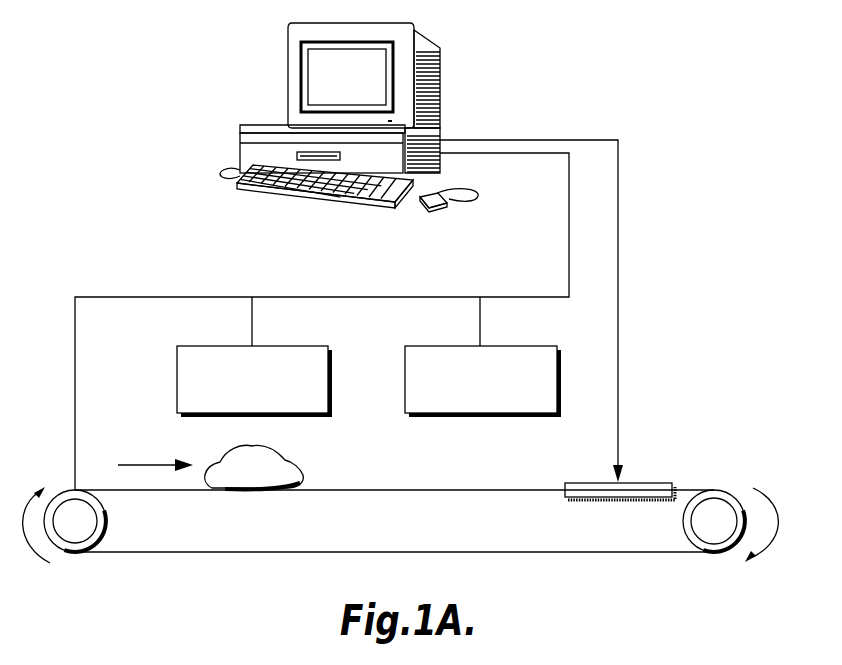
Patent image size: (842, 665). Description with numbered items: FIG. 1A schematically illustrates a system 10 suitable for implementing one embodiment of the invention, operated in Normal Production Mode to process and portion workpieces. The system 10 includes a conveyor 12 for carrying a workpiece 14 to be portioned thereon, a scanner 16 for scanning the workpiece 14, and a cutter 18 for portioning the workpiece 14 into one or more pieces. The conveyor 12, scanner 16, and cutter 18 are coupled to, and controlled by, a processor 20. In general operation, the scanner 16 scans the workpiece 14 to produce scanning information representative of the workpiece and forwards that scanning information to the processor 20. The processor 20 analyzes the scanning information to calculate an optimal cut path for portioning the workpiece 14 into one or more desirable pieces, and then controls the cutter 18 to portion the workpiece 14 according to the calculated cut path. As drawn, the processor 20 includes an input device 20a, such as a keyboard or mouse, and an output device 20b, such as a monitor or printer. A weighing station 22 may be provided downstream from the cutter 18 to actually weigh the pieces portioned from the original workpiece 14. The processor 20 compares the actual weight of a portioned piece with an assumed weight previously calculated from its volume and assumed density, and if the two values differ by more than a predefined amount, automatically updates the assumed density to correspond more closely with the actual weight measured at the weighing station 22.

The system 10 is at (655, 114).
The conveyor 12 is at (183, 552).
The workpiece 14 is at (290, 463).
The scanner 16 is at (177, 382).
The cutter 18 is at (405, 357).
The processor 20 is at (240, 138).
The input device 20a is at (410, 216).
The output device 20b is at (423, 33).
The weighing station 22 is at (657, 483).